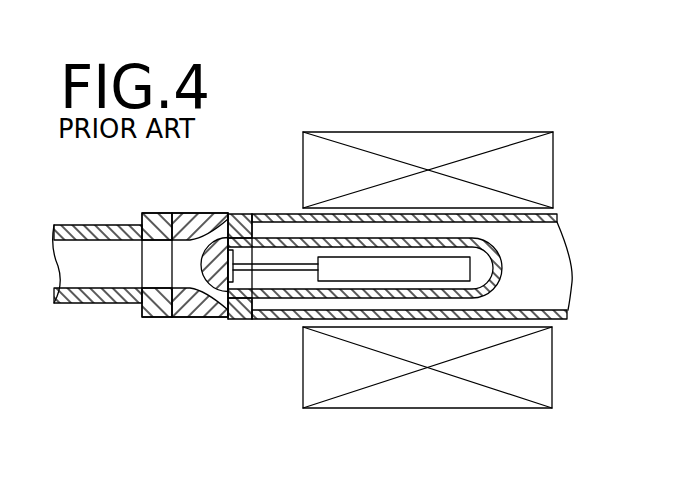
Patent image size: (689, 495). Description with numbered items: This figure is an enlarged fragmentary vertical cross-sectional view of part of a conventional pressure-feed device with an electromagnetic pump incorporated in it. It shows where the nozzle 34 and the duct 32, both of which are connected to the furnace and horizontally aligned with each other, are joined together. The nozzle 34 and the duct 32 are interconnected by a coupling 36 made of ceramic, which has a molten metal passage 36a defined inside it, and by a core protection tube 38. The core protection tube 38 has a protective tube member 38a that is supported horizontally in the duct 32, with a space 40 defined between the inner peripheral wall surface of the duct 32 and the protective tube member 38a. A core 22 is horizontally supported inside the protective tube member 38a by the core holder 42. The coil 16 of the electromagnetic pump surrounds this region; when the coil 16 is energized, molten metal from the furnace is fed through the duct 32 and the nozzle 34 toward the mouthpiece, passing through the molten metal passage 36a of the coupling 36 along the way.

The coil 16 is at (412, 388).
The core 22 is at (461, 269).
The duct 32 is at (428, 217).
The nozzle 34 is at (73, 225).
The coupling 36 is at (194, 213).
The molten metal passage 36a is at (182, 272).
The core protection tube 38 is at (233, 319).
The protective tube member 38a is at (271, 214).
The space 40 is at (337, 230).
The core holder 42 is at (274, 270).